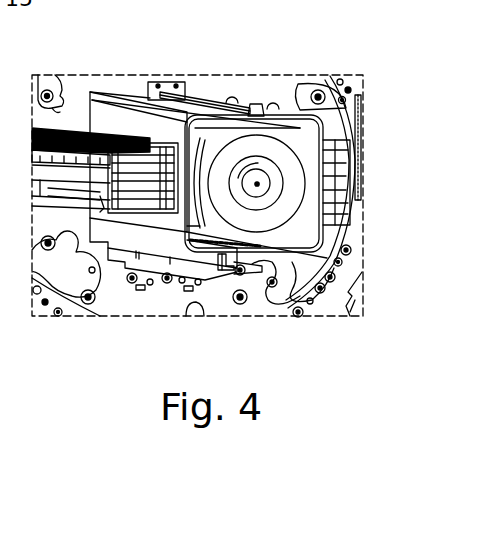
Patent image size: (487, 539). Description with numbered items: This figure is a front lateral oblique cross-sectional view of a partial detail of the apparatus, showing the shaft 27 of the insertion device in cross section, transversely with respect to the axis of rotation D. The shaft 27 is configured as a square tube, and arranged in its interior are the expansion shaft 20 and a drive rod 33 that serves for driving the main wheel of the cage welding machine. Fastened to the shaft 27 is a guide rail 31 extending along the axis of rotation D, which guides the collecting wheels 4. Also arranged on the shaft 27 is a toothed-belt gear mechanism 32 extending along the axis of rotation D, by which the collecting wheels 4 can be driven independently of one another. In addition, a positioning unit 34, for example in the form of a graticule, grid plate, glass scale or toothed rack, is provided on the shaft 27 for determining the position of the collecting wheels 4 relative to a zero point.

The collecting wheel 4 is at (107, 297).
The expansion shaft 20 is at (282, 152).
The shaft 27 is at (208, 110).
The guide rail 31 is at (253, 103).
The toothed-belt gear mechanism 32 is at (68, 150).
The drive rod 33 is at (270, 190).
The positioning unit 34 is at (160, 270).
The axis of rotation D is at (257, 184).